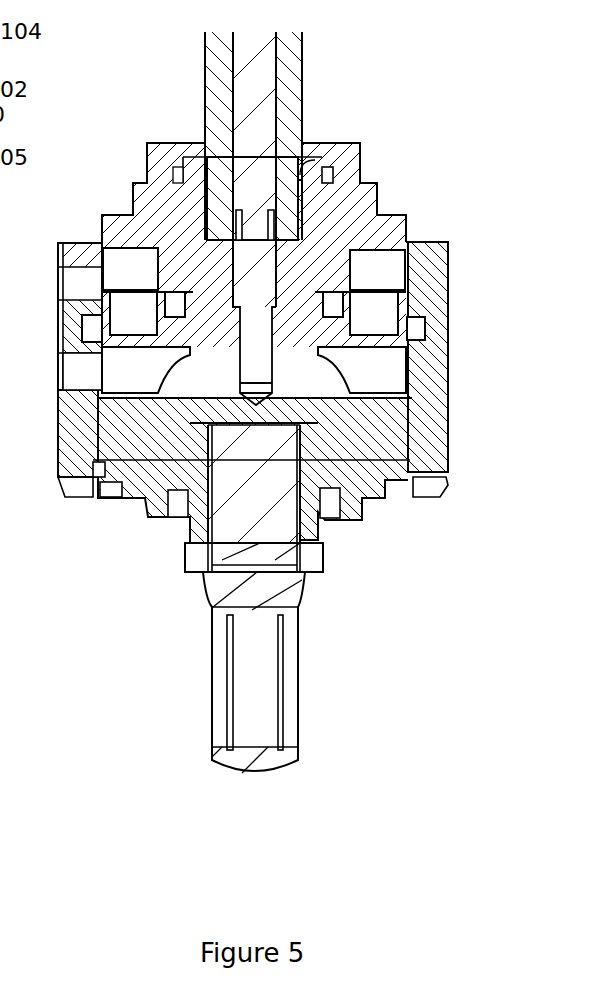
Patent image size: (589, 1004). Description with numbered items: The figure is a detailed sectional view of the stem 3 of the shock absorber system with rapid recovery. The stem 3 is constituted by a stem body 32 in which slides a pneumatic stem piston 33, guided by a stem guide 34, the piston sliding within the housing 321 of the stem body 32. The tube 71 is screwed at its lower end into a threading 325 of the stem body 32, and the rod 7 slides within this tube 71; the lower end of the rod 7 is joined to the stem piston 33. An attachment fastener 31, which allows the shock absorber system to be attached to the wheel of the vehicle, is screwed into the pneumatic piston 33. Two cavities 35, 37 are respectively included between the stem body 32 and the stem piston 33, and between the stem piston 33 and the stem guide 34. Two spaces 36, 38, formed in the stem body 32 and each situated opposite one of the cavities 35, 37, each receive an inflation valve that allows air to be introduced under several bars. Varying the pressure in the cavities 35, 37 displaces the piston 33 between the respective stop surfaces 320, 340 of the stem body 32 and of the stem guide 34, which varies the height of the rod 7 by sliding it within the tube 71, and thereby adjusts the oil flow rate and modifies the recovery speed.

The stem 3 is at (231, 391).
The rod 7 is at (235, 77).
The tube 71 is at (218, 80).
The fastener 31 is at (253, 677).
The stem body 32 is at (350, 217).
The stem piston 33 is at (207, 345).
The stem guide 34 is at (376, 480).
The cavity 35 is at (125, 280).
The space 36 is at (77, 283).
The cavity 37 is at (73, 488).
The space 38 is at (78, 372).
The stop surface 320 is at (182, 275).
The housing 321 is at (422, 240).
The threading 325 is at (300, 175).
The stop surface 340 is at (351, 500).